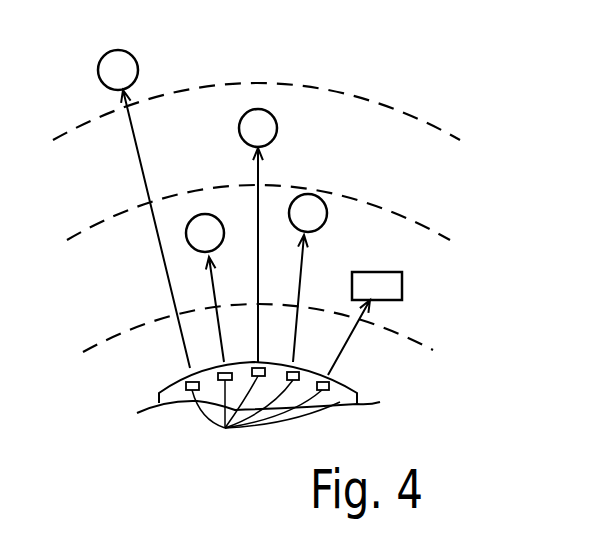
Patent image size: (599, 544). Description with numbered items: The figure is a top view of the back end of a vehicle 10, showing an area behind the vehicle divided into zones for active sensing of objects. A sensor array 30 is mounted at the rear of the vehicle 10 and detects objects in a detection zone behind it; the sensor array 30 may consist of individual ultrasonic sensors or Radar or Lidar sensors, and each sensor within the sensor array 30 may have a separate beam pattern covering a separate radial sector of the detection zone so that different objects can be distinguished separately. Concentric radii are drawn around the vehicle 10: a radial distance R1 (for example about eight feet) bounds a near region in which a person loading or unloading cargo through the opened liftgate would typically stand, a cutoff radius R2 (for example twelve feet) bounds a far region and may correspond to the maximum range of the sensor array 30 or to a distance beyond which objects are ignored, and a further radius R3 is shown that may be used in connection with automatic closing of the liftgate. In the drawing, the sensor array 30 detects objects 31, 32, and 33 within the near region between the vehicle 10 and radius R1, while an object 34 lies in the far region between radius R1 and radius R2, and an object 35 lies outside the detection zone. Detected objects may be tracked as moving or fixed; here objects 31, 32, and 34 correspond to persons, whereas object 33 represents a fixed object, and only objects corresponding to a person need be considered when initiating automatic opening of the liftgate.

The vehicle 10 is at (358, 397).
The sensor array 30 is at (263, 412).
The object 31 is at (192, 218).
The object 32 is at (326, 202).
The object 33 is at (402, 292).
The object 34 is at (270, 112).
The object 35 is at (137, 58).
The radial distance R1 is at (276, 226).
The cutoff radius R2 is at (274, 124).
The radius R3 is at (276, 337).